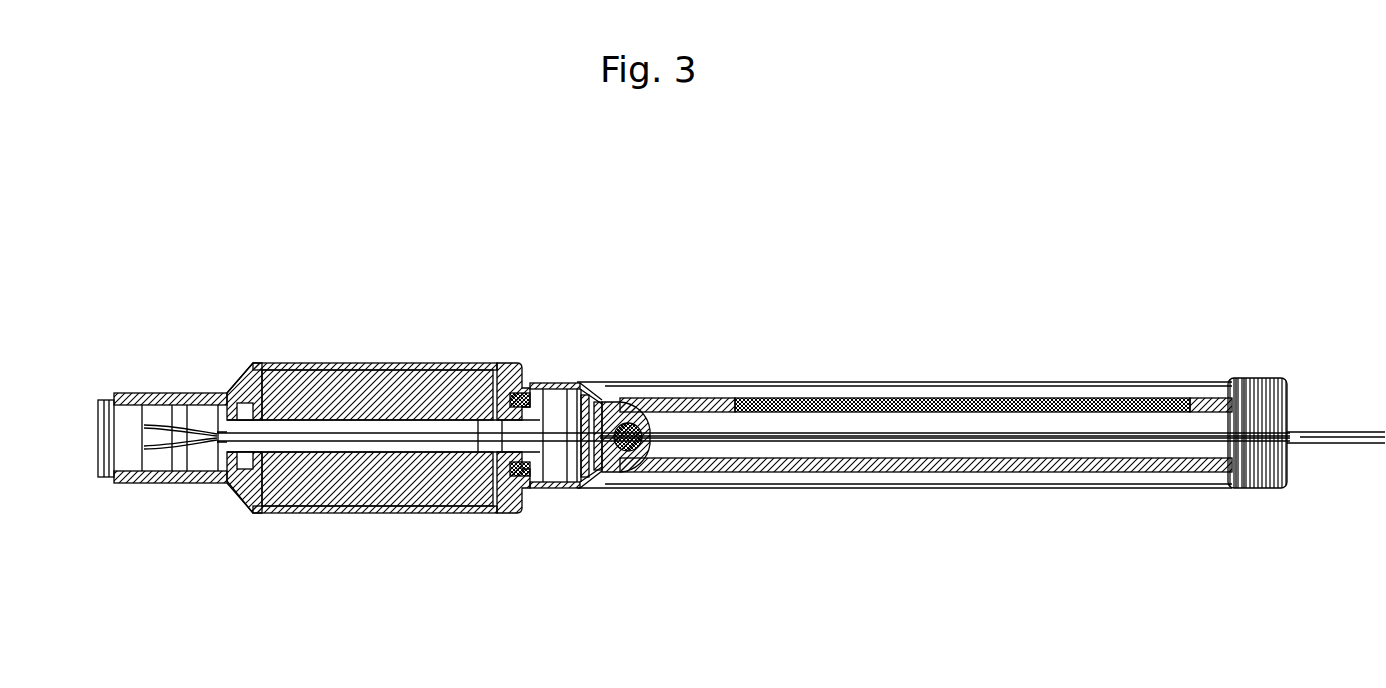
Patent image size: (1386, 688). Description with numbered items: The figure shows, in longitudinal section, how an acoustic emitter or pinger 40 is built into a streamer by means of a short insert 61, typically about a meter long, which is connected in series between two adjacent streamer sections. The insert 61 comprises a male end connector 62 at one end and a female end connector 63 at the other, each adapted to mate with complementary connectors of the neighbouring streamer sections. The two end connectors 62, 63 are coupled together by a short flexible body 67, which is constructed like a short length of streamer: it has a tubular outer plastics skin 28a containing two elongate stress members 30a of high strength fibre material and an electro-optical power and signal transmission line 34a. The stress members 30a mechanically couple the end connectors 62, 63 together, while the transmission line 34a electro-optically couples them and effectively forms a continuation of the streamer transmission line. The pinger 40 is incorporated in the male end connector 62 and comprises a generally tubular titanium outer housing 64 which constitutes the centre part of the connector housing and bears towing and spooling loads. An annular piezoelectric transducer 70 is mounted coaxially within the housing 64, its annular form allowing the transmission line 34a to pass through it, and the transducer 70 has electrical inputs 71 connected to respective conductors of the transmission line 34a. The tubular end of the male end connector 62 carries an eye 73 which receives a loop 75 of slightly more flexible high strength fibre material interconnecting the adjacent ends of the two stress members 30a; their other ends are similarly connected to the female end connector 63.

The male end connector 62 is at (132, 358).
The annular piezoelectric transducer 70 is at (338, 365).
The tubular outer housing 64 is at (450, 365).
The electrical inputs 71 is at (545, 366).
The loop 75 is at (645, 368).
The flexible body 67 is at (664, 393).
The eye 73 is at (620, 475).
The insert 61 is at (801, 391).
The female end connector 63 is at (1294, 326).
The stress members 30a is at (985, 382).
The electro-optical power and signal transmission line 34a is at (932, 436).
The tubular outer plastics skin 28a is at (1020, 486).
The pinger 40 is at (413, 459).